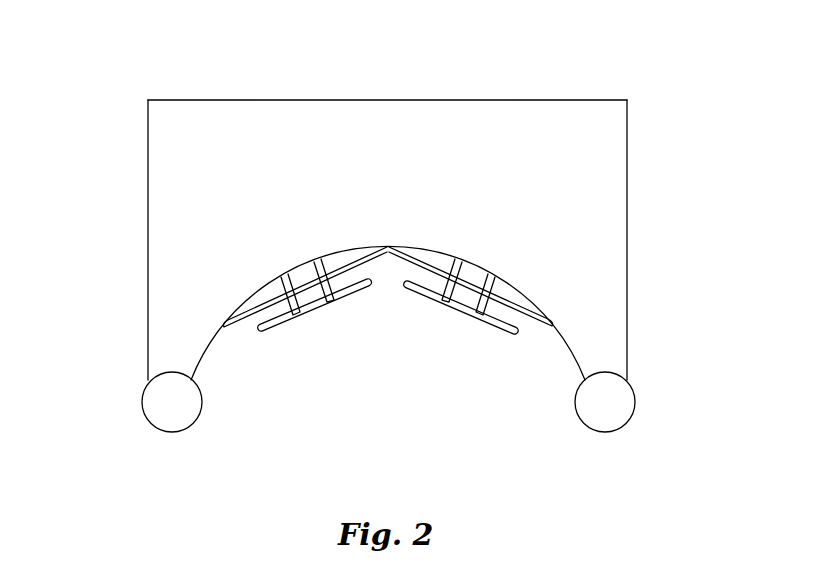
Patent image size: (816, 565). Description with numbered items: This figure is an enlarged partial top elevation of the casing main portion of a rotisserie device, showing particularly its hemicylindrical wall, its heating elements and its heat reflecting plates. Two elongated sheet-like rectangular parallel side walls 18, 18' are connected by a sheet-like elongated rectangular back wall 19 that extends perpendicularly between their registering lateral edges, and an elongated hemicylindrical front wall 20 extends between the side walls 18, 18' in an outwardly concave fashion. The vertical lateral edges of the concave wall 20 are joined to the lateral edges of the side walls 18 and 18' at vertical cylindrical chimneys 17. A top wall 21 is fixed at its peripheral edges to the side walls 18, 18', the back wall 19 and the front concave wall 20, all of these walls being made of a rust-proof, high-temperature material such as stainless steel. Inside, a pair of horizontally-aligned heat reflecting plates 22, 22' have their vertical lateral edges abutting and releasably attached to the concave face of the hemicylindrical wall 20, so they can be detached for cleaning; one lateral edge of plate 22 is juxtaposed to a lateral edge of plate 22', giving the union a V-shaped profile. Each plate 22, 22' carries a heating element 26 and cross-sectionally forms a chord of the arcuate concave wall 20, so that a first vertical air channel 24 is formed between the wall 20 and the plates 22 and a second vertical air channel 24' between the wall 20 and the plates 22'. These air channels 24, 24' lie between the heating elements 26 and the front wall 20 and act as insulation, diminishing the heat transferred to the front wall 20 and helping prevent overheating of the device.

The vertical cylindrical chimneys 17 is at (163, 432).
The side wall 18 is at (694, 240).
The side wall 18' is at (85, 240).
The back wall 19 is at (205, 100).
The hemicylindrical front wall 20 is at (197, 365).
The top wall 21 is at (197, 143).
The heat reflecting plate 22 is at (471, 340).
The heat reflecting plate 22' is at (306, 340).
The first vertical air channel 24 is at (506, 175).
The second vertical air channel 24' is at (325, 179).
The heating elements 26 is at (315, 320).